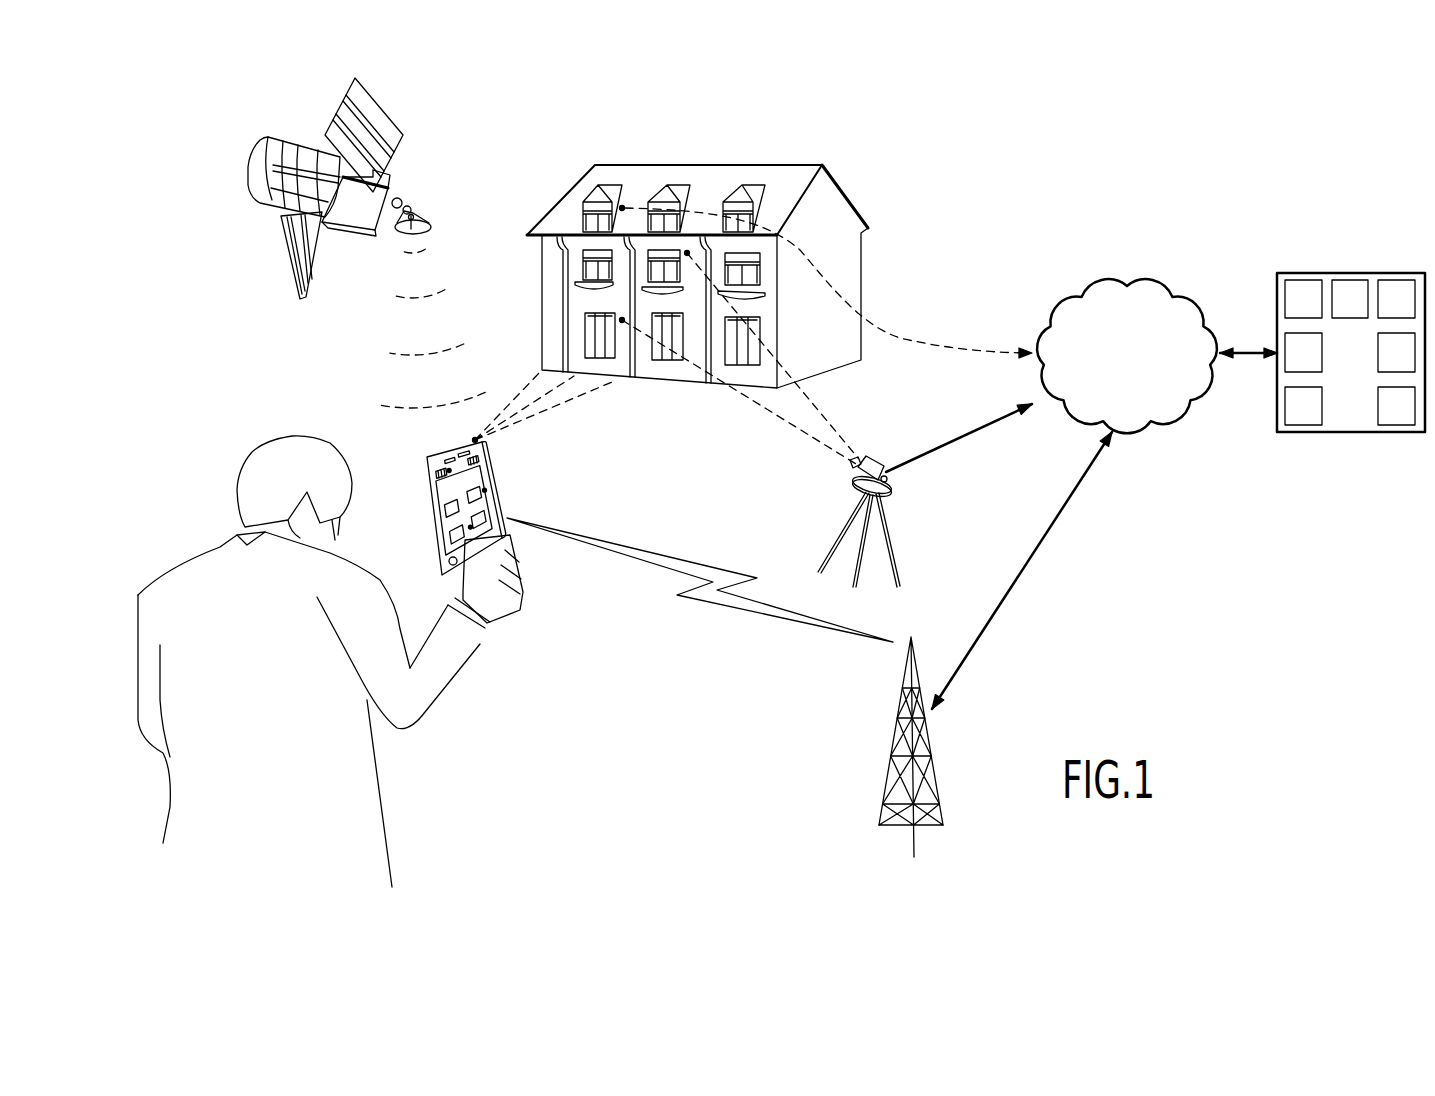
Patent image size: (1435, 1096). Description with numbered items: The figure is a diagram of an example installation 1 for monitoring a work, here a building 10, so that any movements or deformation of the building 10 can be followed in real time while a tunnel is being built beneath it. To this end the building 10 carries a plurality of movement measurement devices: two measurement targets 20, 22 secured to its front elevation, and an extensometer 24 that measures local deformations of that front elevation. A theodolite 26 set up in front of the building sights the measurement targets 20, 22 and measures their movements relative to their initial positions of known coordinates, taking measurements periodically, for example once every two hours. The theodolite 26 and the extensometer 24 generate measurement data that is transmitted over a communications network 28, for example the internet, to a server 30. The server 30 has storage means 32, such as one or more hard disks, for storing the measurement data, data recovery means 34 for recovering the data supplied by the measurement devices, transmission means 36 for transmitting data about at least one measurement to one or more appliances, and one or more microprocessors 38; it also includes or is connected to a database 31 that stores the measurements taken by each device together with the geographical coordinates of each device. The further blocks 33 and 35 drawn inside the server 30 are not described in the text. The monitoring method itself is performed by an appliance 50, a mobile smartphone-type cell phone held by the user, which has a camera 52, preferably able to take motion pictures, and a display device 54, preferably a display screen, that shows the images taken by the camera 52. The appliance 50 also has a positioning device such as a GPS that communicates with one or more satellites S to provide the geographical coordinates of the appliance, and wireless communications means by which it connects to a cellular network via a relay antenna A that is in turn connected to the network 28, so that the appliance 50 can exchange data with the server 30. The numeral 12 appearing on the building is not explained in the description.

The installation 1 is at (1145, 142).
The building 10 is at (860, 157).
The building facade 12 is at (657, 378).
The measurement target 20 is at (622, 320).
The measurement target 22 is at (687, 253).
The extensometer 24 is at (622, 208).
The theodolite 26 is at (882, 466).
The communications network 28 is at (1134, 364).
The server 30 is at (1351, 329).
The database 31 is at (1315, 311).
The storage means 32 is at (1409, 311).
The server module 33 is at (1315, 364).
The data recovery means 34 is at (1409, 364).
The server module 35 is at (1362, 311).
The transmission means 36 is at (1409, 417).
The microprocessor 38 is at (1315, 417).
The appliance 50 is at (461, 497).
The camera 52 is at (475, 440).
The display device 54 is at (486, 491).
The satellite S is at (292, 152).
The relay antenna A is at (896, 736).